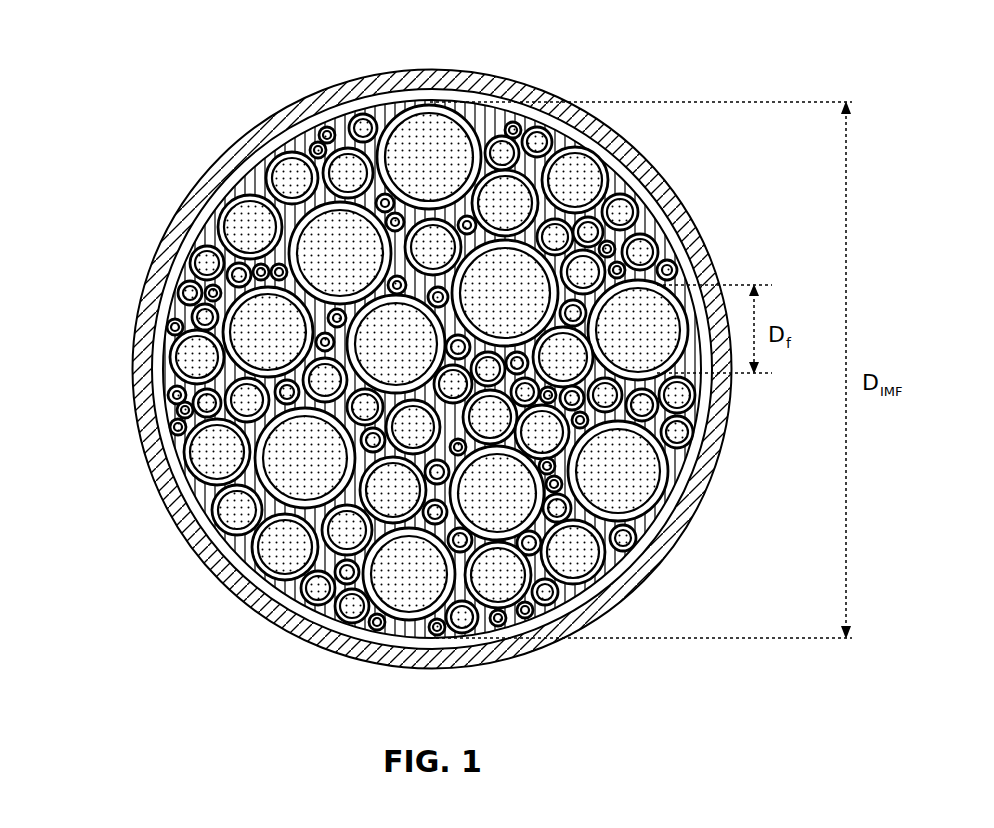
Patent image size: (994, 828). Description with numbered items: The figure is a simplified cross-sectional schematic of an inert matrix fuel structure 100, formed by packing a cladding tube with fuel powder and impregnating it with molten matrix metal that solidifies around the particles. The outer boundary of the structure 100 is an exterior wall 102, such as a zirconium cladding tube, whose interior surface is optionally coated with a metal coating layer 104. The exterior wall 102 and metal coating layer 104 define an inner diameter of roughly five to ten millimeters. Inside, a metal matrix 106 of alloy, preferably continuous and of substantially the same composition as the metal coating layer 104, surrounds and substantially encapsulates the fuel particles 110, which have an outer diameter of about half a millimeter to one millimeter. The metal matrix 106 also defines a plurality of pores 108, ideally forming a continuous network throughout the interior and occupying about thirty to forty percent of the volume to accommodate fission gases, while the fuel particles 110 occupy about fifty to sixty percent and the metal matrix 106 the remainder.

The structure 100 is at (96, 128).
The exterior wall 102 is at (366, 83).
The metal coating layer 104 is at (438, 100).
The metal matrix 106 is at (190, 264).
The pores 108 is at (198, 228).
The fuel particles 110 is at (742, 460).